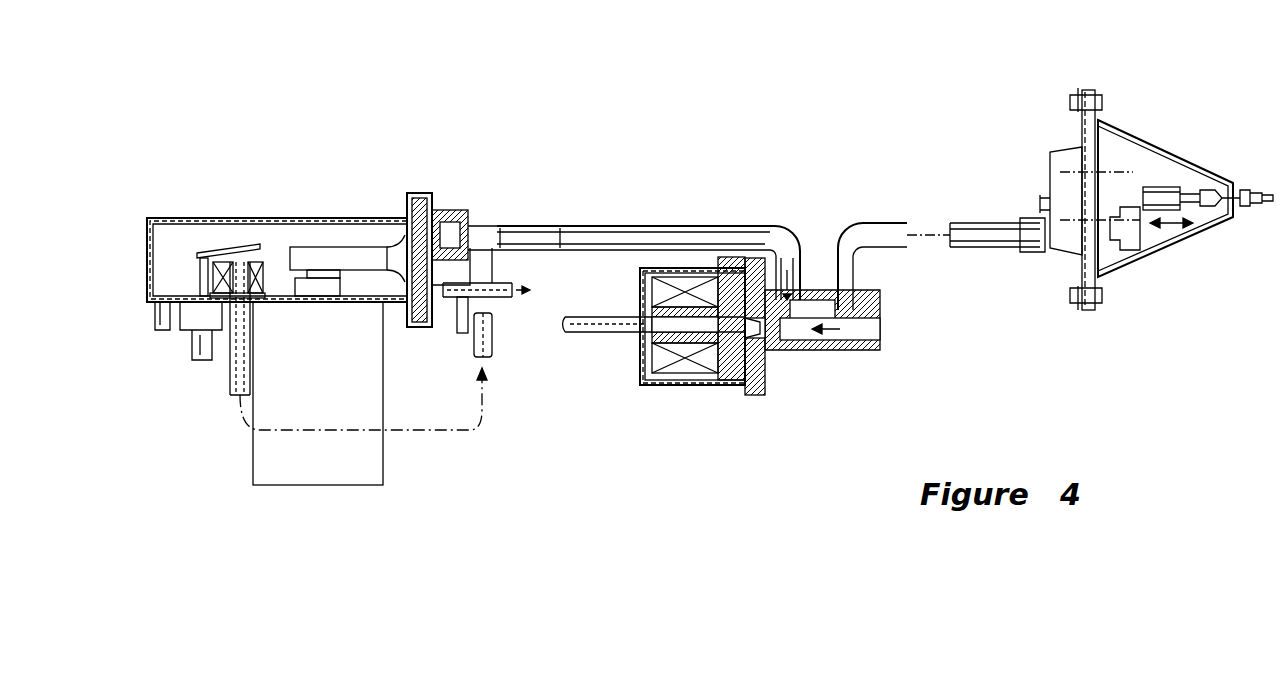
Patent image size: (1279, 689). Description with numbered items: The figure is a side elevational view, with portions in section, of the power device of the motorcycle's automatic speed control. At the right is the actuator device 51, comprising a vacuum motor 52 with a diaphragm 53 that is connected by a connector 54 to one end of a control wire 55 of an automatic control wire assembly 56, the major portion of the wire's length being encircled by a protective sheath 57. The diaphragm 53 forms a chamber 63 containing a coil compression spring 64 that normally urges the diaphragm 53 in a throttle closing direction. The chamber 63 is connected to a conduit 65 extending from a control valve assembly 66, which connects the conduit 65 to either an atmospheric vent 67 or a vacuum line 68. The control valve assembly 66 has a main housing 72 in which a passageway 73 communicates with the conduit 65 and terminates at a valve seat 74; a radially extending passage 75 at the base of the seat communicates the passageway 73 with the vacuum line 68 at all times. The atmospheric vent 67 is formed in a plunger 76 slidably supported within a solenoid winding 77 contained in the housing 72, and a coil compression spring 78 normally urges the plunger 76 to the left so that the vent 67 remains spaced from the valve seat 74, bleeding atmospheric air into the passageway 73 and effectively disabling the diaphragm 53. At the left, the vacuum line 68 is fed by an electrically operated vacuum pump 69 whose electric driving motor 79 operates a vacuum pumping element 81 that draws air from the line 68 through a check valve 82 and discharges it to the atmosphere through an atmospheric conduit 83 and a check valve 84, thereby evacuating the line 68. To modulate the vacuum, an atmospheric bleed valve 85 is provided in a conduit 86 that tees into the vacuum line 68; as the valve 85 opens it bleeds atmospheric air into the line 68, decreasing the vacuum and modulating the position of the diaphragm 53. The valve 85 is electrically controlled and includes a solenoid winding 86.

The actuator device 51 is at (1122, 133).
The vacuum motor 52 is at (1122, 268).
The diaphragm 53 is at (1150, 230).
The connector 54 is at (1165, 187).
The control wire 55 is at (1192, 192).
The automatic control wire assembly 56 is at (1262, 188).
The protective sheath 57 is at (1268, 204).
The chamber 63 is at (1084, 170).
The coil compression spring 64 is at (1052, 255).
The conduit 65 is at (865, 224).
The control valve assembly 66 is at (697, 388).
The atmospheric vent 67 is at (590, 334).
The vacuum line 68 is at (596, 226).
The vacuum pump 69 is at (335, 495).
The main housing 72 is at (805, 343).
The passageway 73 is at (802, 282).
The valve seat 74 is at (838, 351).
The radially extending passage 75 is at (762, 345).
The plunger 76 is at (641, 368).
The solenoid winding 77 is at (656, 291).
The coil compression spring 78 is at (742, 397).
The electric driving motor 79 is at (268, 460).
The vacuum pumping element 81 is at (387, 236).
The check valve 82 is at (462, 212).
The atmospheric conduit 83 is at (496, 302).
The check valve 84 is at (462, 336).
The atmospheric bleed valve 85 is at (228, 247).
The conduit 86 is at (222, 305).